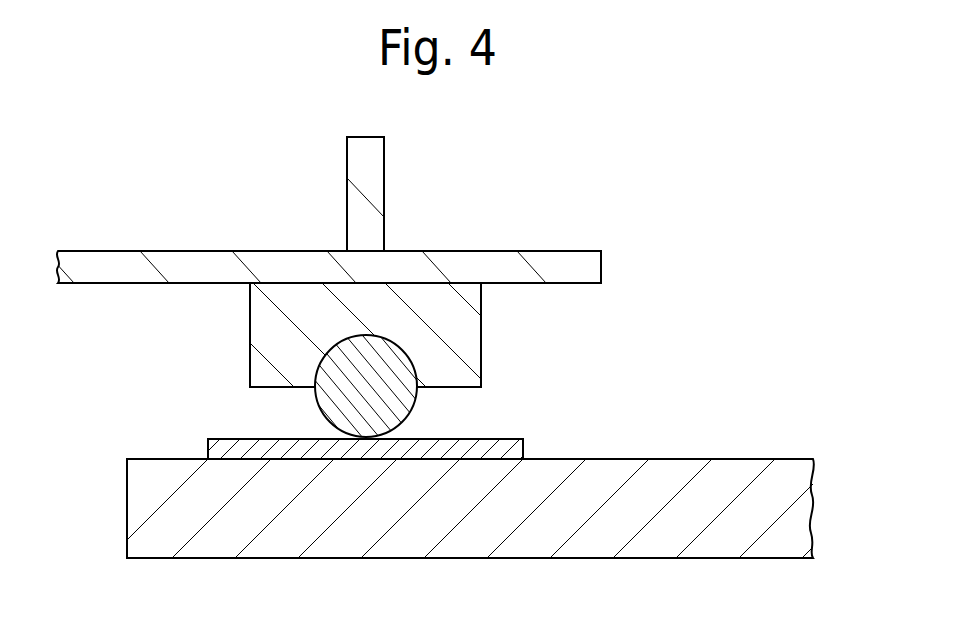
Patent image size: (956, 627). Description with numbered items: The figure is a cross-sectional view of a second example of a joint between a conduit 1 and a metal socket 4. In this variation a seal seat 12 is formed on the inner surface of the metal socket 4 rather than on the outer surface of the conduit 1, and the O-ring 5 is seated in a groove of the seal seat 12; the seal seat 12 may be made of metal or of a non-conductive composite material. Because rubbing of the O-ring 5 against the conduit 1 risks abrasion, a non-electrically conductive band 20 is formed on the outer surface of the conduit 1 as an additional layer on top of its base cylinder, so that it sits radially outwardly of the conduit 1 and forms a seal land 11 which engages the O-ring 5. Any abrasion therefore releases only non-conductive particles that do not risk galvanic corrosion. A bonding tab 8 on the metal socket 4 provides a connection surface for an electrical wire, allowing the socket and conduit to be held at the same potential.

The conduit 1 is at (743, 472).
The metal socket 4 is at (553, 263).
The O-ring 5 is at (397, 401).
The bonding tab 8 is at (373, 159).
The seal land 11 is at (518, 447).
The seal seat 12 is at (267, 335).
The non-electrically conductive band 20 is at (222, 443).